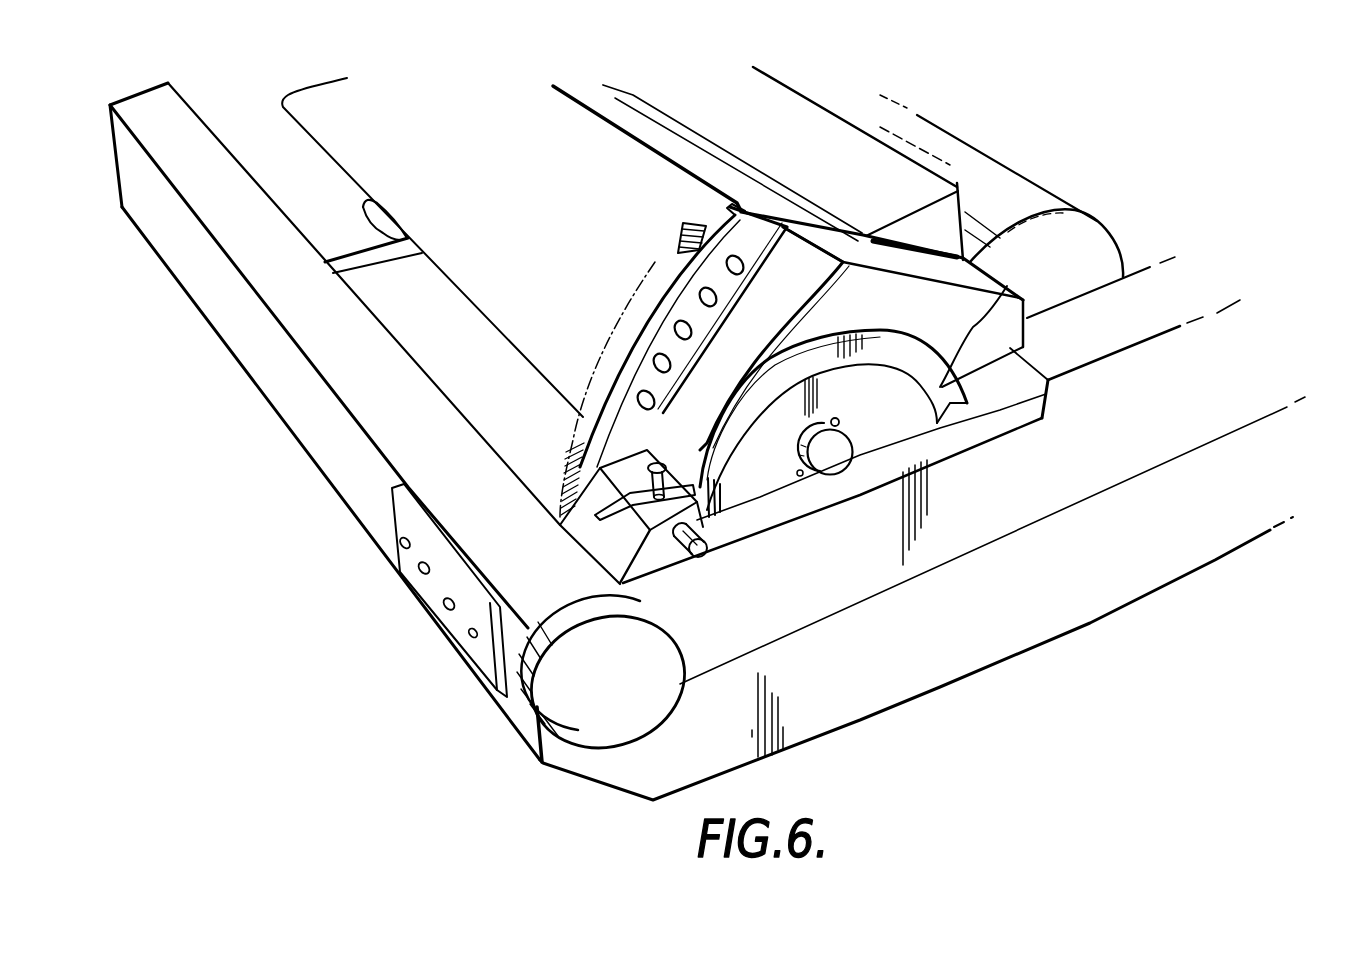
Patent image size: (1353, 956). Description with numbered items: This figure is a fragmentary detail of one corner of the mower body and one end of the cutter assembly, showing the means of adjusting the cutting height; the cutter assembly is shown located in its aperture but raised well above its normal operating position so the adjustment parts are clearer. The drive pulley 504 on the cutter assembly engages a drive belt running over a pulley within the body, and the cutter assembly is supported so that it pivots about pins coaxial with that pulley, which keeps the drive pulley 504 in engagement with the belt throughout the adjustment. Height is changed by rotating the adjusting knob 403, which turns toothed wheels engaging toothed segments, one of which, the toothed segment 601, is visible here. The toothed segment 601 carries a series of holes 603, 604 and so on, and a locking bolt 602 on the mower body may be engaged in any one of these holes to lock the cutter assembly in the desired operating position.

The toothed segment 601 is at (677, 243).
The locking bolt 602 is at (707, 555).
The hole 603 is at (673, 325).
The hole 604 is at (657, 358).
The drive pulley 504 is at (1002, 288).
The adjusting knob 403 is at (637, 687).